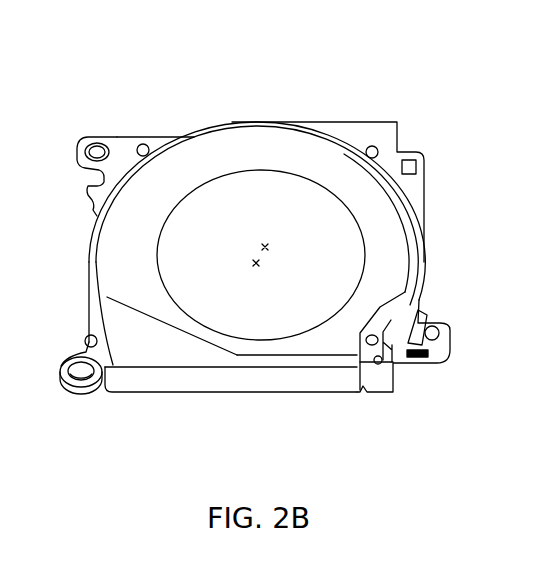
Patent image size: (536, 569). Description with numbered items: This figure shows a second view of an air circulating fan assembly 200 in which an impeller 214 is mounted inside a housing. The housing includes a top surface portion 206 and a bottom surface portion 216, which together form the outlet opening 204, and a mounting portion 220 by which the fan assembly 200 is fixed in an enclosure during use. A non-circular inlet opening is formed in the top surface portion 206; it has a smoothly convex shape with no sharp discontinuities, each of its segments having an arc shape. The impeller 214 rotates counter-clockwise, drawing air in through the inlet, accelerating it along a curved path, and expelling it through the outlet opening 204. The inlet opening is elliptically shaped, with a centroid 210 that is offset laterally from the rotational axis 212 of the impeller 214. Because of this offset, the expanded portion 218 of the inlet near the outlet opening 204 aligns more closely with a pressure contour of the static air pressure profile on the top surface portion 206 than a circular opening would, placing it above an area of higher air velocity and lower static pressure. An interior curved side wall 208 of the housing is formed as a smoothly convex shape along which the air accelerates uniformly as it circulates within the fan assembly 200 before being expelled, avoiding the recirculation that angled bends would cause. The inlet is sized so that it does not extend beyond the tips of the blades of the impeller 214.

The fan assembly 200 is at (448, 90).
The outlet opening 204 is at (148, 383).
The top surface portion 206 is at (305, 153).
The interior curved side wall 208 is at (393, 190).
The centroid 210 is at (257, 272).
The rotational axis 212 is at (265, 238).
The impeller 214 is at (303, 254).
The bottom surface portion 216 is at (317, 394).
The expanded portion of the inlet opening 218 is at (163, 307).
The mounting portion 220 is at (122, 143).